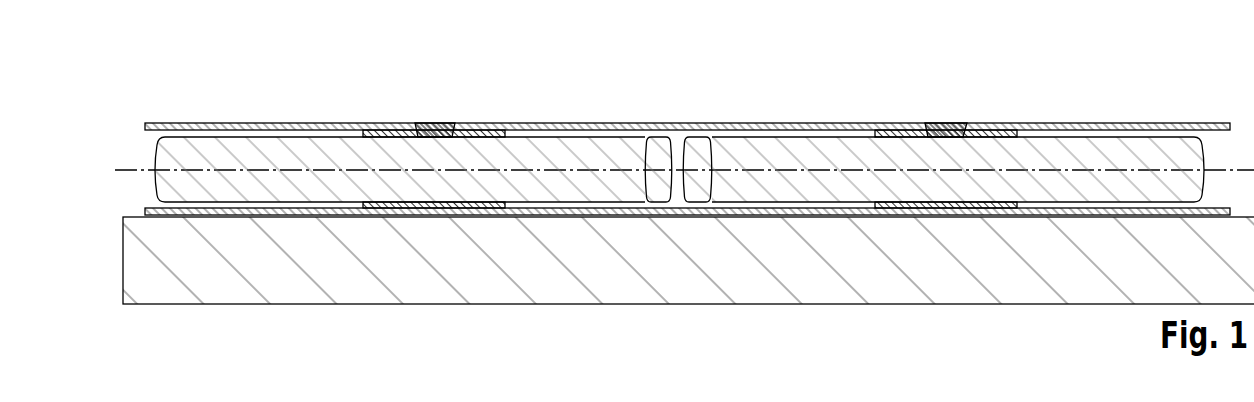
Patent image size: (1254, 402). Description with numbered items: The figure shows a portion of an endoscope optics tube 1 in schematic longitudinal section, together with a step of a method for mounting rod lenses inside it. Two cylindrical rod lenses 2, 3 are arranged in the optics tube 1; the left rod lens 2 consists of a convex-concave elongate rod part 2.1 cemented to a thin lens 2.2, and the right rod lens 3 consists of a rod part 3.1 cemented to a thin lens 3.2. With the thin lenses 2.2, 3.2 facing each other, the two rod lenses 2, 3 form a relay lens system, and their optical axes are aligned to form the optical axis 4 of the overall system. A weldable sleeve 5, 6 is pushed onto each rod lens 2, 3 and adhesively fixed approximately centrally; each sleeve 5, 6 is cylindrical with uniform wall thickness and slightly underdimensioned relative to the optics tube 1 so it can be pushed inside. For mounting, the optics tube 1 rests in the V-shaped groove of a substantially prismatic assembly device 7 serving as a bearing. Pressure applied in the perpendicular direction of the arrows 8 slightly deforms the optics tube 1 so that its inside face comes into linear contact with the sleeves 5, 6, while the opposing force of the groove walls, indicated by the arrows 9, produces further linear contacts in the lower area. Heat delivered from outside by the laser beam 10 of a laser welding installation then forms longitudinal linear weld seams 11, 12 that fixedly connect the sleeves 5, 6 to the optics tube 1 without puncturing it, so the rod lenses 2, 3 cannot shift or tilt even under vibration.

The optics tube 1 is at (179, 128).
The rod lens 2 is at (260, 137).
The rod part 2.1 is at (598, 145).
The thin lens 2.2 is at (657, 145).
The rod lens 3 is at (1133, 137).
The rod part 3.1 is at (755, 145).
The thin lens 3.2 is at (697, 145).
The optical axis 4 is at (125, 170).
The weldable sleeve 5 is at (373, 133).
The weldable sleeve 6 is at (882, 133).
The assembly device 7 is at (572, 293).
The arrows 8 is at (385, 112).
The arrows 9 is at (434, 228).
The laser beam 10 is at (435, 112).
The weld seam 11 is at (445, 132).
The weld seam 12 is at (955, 133).